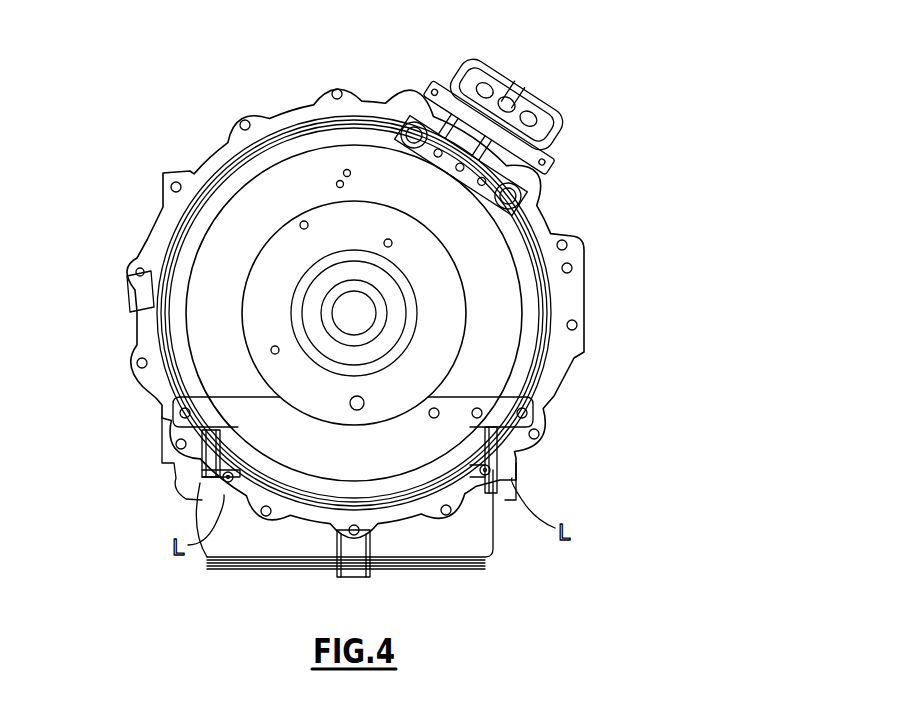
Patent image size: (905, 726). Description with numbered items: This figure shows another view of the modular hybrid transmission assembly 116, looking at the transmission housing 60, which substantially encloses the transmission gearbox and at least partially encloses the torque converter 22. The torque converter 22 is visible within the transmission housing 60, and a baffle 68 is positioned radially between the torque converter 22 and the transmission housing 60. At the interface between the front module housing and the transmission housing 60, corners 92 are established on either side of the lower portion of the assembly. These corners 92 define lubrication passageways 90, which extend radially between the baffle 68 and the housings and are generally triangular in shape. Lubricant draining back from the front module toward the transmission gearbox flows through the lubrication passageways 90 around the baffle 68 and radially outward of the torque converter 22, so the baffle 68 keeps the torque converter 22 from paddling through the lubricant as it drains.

The modular hybrid transmission assembly 116 is at (327, 310).
The transmission housing 60 is at (555, 215).
The torque converter 22 is at (508, 314).
The baffle 68 is at (430, 437).
The corners 92 is at (200, 512).
The lubrication passageways 90 is at (234, 480).